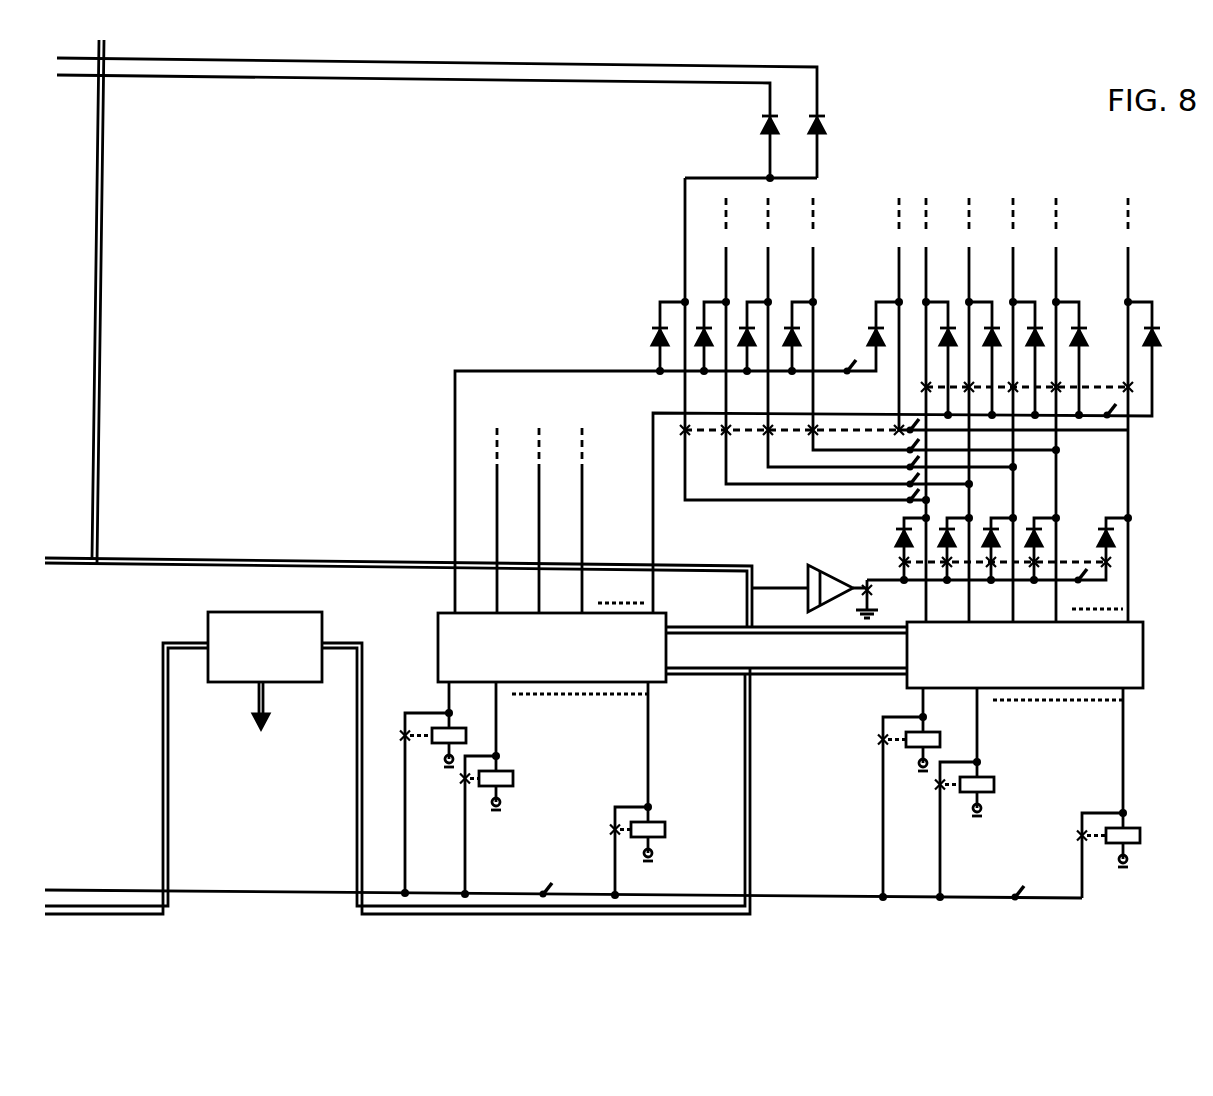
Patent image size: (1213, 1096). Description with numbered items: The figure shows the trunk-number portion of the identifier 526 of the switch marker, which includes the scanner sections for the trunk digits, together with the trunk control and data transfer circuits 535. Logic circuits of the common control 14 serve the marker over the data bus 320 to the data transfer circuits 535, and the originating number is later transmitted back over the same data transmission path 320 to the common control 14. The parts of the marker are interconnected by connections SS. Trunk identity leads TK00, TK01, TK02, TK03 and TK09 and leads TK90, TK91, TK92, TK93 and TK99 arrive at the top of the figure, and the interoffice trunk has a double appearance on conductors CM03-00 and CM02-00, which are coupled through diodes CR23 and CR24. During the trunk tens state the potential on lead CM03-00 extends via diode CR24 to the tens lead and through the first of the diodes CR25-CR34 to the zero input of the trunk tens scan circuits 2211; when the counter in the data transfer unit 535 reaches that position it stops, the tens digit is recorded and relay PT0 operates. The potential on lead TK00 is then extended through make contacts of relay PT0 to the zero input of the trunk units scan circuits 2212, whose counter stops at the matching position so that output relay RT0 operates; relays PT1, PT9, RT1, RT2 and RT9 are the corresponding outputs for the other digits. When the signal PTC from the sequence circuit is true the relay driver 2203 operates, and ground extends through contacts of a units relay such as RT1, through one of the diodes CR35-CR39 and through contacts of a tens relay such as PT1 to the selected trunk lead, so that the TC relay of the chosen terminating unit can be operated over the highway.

The identifier 526 is at (1164, 179).
The trunk control and data transfer circuits 535 is at (282, 674).
The data bus 320 is at (264, 696).
The common control 14 is at (256, 767).
The trunk tens scan circuits 2211 is at (572, 681).
The trunk units scan circuits 2212 is at (1003, 684).
The relay driver 2203 is at (826, 566).
The connections SS is at (102, 114).
The conductor CM03-00 is at (782, 67).
The conductor CM02-00 is at (752, 84).
The diode CR23 is at (762, 127).
The diode CR24 is at (824, 127).
The diodes CR25-CR34 is at (646, 336).
The diodes CR35-CR39 is at (891, 531).
The lead TK00 is at (685, 259).
The lead TK01 is at (726, 259).
The lead TK02 is at (768, 259).
The lead TK03 is at (813, 259).
The lead TK09 is at (899, 259).
The lead TK90 is at (926, 259).
The lead TK91 is at (969, 259).
The lead TK92 is at (1013, 259).
The lead TK93 is at (1056, 259).
The lead TK99 is at (1128, 259).
The relay PT0 is at (708, 431).
The relay PT1 is at (508, 773).
The relay PT9 is at (1083, 387).
The signal PTC is at (798, 588).
The output relay RT0 is at (899, 561).
The relay RT1 is at (988, 777).
The relay RT2 is at (986, 562).
The relay RT9 is at (1100, 560).